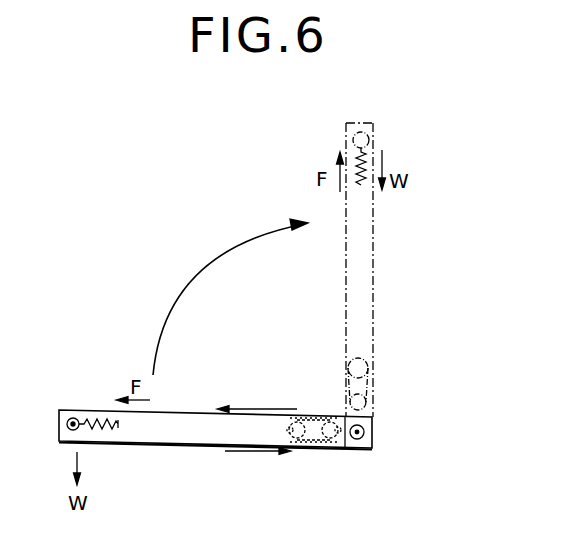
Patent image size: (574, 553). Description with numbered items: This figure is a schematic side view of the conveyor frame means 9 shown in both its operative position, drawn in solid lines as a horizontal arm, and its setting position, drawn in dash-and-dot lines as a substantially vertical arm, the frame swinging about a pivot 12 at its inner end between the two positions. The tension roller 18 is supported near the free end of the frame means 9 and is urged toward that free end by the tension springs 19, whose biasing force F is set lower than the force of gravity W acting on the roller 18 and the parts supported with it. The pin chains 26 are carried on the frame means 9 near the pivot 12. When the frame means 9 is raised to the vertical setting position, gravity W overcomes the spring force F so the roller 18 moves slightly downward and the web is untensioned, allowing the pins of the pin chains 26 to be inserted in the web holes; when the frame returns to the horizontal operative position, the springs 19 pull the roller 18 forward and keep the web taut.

The lever arm (9, 9') 9 is at (178, 432).
The pivot 12 is at (372, 431).
The tension roller 18 is at (73, 417).
The tension springs 19 is at (104, 442).
The pin chains 26 is at (370, 393).